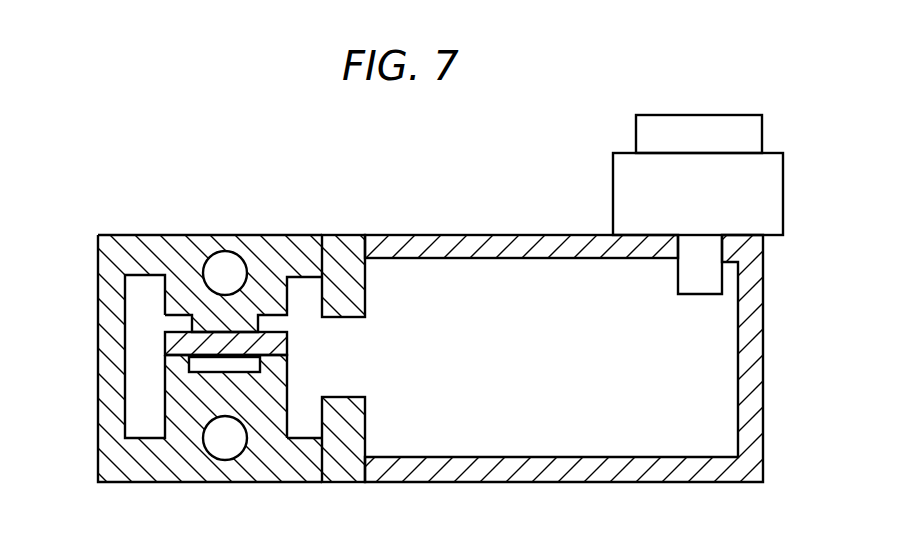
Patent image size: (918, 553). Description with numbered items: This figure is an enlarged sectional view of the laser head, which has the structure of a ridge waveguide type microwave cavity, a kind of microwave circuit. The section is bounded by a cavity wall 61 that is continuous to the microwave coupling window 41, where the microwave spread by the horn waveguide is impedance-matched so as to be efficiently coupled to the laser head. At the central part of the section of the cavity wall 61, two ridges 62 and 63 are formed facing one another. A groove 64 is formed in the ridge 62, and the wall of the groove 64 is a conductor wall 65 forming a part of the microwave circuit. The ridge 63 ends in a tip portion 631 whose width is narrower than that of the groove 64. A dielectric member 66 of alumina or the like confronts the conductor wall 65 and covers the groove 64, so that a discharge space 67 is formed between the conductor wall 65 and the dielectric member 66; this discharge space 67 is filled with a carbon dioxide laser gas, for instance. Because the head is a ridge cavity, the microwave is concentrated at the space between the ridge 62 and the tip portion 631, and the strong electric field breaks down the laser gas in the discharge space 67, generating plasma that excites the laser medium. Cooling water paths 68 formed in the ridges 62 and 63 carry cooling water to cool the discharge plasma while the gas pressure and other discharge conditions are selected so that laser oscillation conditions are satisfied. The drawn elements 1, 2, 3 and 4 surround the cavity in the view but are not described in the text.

The drive unit 1 is at (627, 173).
The cylinder housing 2 is at (583, 242).
The cylinder tube wall 3 is at (466, 242).
The end wall 4 is at (353, 250).
The microwave coupling window 41 is at (345, 358).
The cavity wall 61 is at (312, 245).
The ridge 62 is at (183, 401).
The ridge 63 is at (168, 289).
The tip portion 631 is at (228, 333).
The groove 64 is at (263, 369).
The conductor wall 65 is at (225, 398).
The dielectric member 66 is at (187, 362).
The discharge space 67 is at (258, 312).
The cooling water paths 68 is at (222, 265).